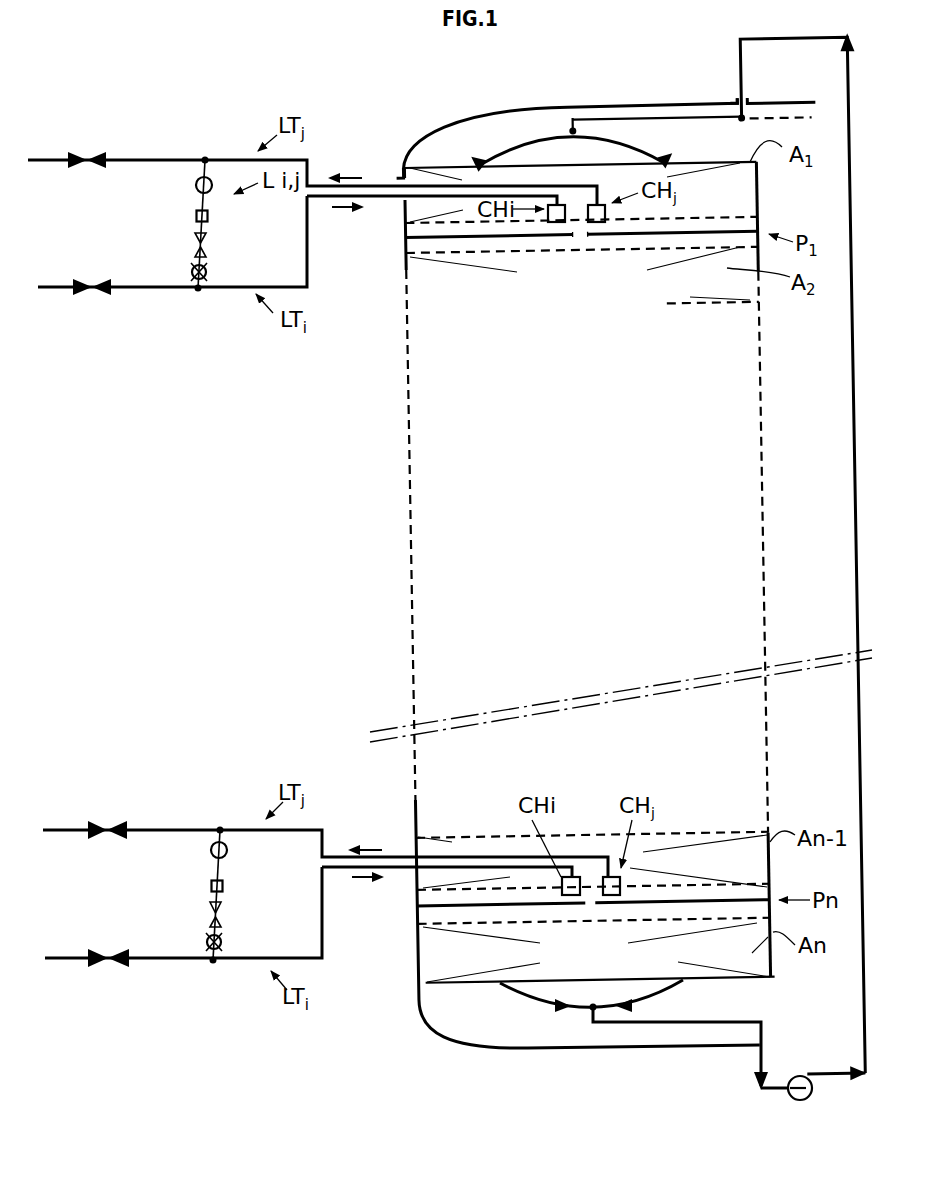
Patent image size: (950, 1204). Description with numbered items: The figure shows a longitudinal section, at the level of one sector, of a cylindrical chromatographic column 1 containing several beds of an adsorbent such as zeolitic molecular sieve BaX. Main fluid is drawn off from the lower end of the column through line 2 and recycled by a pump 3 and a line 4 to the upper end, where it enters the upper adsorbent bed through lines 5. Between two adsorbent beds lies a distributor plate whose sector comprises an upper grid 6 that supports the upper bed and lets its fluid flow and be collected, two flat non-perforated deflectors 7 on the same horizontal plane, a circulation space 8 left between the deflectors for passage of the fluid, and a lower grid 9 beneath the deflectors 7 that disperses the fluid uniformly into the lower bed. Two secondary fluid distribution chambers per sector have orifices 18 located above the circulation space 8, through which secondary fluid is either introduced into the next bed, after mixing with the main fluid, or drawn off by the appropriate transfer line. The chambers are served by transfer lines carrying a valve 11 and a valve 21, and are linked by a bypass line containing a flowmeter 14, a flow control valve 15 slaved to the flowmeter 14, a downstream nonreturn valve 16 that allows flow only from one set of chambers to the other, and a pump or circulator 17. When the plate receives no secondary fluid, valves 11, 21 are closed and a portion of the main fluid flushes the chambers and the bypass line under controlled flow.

The chromatographic column 1 is at (240, 553).
The line 2 is at (682, 1048).
The pump 3 is at (797, 1100).
The line 4 is at (593, 123).
The lines 5 is at (493, 157).
The upper grid 6 is at (697, 212).
The flat non-perforated deflectors 7 is at (730, 230).
The circulation space 8 is at (580, 238).
The lower grid 9 is at (468, 257).
The valve 11 is at (76, 152).
The flowmeter 14 is at (208, 214).
The flow control valve 15 is at (193, 238).
The nonreturn valve 16 is at (205, 268).
The pump or circulator 17 is at (196, 185).
The orifices 18 is at (556, 226).
The valve 21 is at (82, 297).